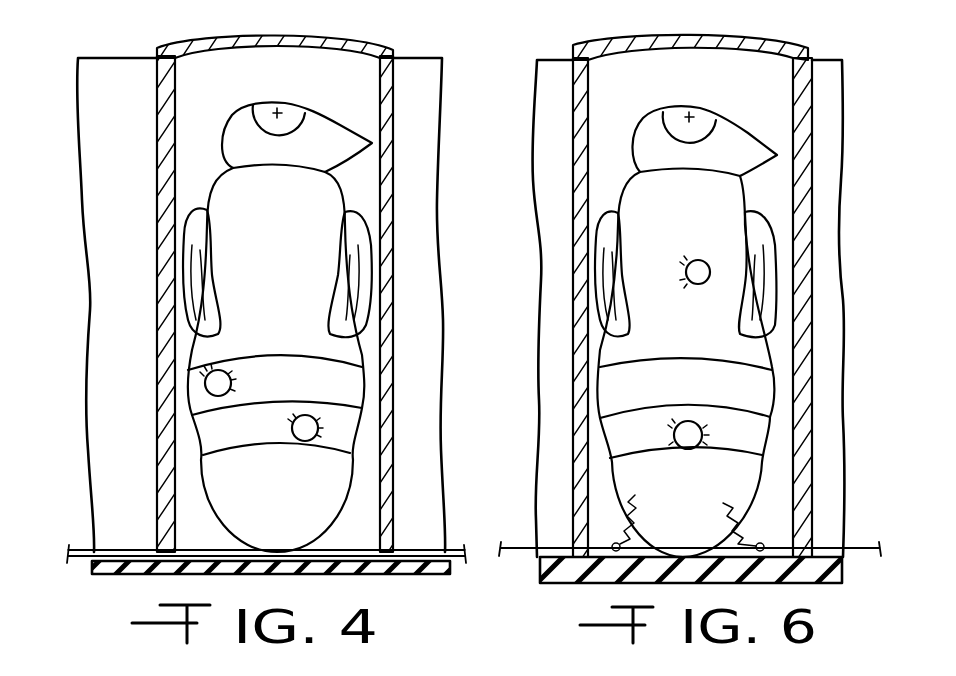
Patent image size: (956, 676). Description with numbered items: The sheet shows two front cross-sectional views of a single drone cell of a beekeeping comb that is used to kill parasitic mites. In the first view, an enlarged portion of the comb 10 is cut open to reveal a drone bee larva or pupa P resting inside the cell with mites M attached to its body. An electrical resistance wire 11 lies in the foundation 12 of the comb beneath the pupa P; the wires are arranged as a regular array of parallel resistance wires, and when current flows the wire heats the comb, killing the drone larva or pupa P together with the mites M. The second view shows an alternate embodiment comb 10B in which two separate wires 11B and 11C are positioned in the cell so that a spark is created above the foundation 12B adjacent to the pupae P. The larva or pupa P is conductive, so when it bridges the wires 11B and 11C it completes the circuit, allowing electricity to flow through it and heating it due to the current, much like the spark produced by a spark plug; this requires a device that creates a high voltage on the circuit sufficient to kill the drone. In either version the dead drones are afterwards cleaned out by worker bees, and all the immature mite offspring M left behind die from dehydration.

In FIG. 4, the comb 10 is at (458, 83).
In FIG. 6, the comb 10B is at (845, 74).
In FIG. 4, the electrical resistance wire 11 is at (85, 552).
In FIG. 6, the wire 11B is at (520, 546).
In FIG. 6, the wire 11C is at (857, 543).
In FIG. 4, the foundation 12 is at (105, 577).
In FIG. 6, the foundation 12B is at (842, 568).
In FIG. 4, the mites M is at (205, 390).
In FIG. 6, the mites M is at (710, 267).
In FIG. 4, the larvae or pupae P is at (279, 263).
In FIG. 6, the larvae or pupae P is at (692, 233).